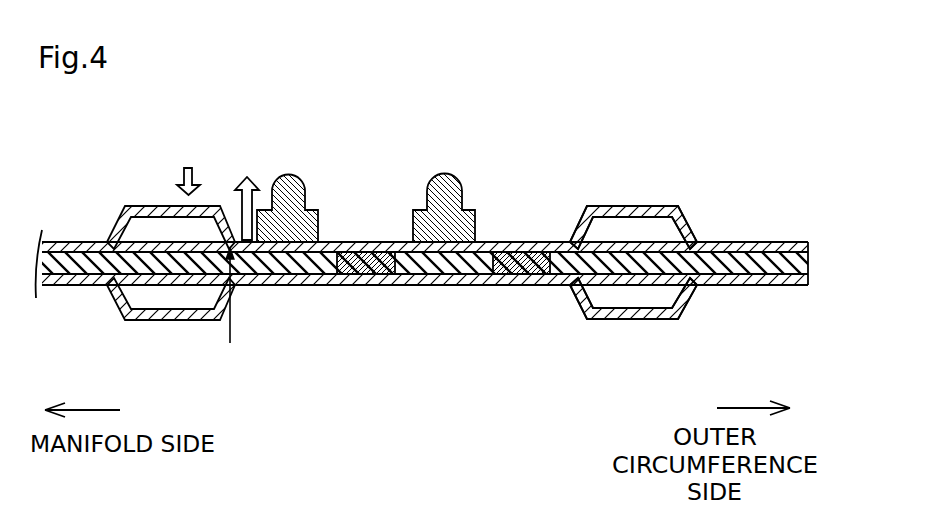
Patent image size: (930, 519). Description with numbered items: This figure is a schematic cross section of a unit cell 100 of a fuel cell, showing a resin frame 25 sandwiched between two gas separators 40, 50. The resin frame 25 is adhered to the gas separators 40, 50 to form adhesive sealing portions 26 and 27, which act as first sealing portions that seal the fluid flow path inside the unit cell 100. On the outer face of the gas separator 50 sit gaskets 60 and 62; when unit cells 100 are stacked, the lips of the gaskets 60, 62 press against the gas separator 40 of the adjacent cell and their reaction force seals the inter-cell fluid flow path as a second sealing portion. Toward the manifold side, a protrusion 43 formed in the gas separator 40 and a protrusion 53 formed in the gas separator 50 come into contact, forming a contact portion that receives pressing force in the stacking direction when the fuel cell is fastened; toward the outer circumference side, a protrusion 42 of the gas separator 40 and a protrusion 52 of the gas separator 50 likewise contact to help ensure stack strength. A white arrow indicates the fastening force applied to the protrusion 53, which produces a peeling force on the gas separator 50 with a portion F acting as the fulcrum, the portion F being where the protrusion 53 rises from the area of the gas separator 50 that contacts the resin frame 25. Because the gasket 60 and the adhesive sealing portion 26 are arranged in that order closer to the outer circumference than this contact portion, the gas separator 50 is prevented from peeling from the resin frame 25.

The unit cell 100 is at (725, 135).
The resin frame 25 is at (768, 242).
The adhesive sealing portion 26 is at (352, 258).
The adhesive sealing portion 27 is at (517, 258).
The gas separator 40 is at (578, 303).
The protrusion 42 is at (632, 319).
The protrusion 43 is at (170, 320).
The gas separator 50 is at (578, 232).
The protrusion 52 is at (628, 206).
The protrusion 53 is at (143, 206).
The gasket 60 is at (297, 178).
The gasket 62 is at (450, 177).
The portion F is at (232, 310).